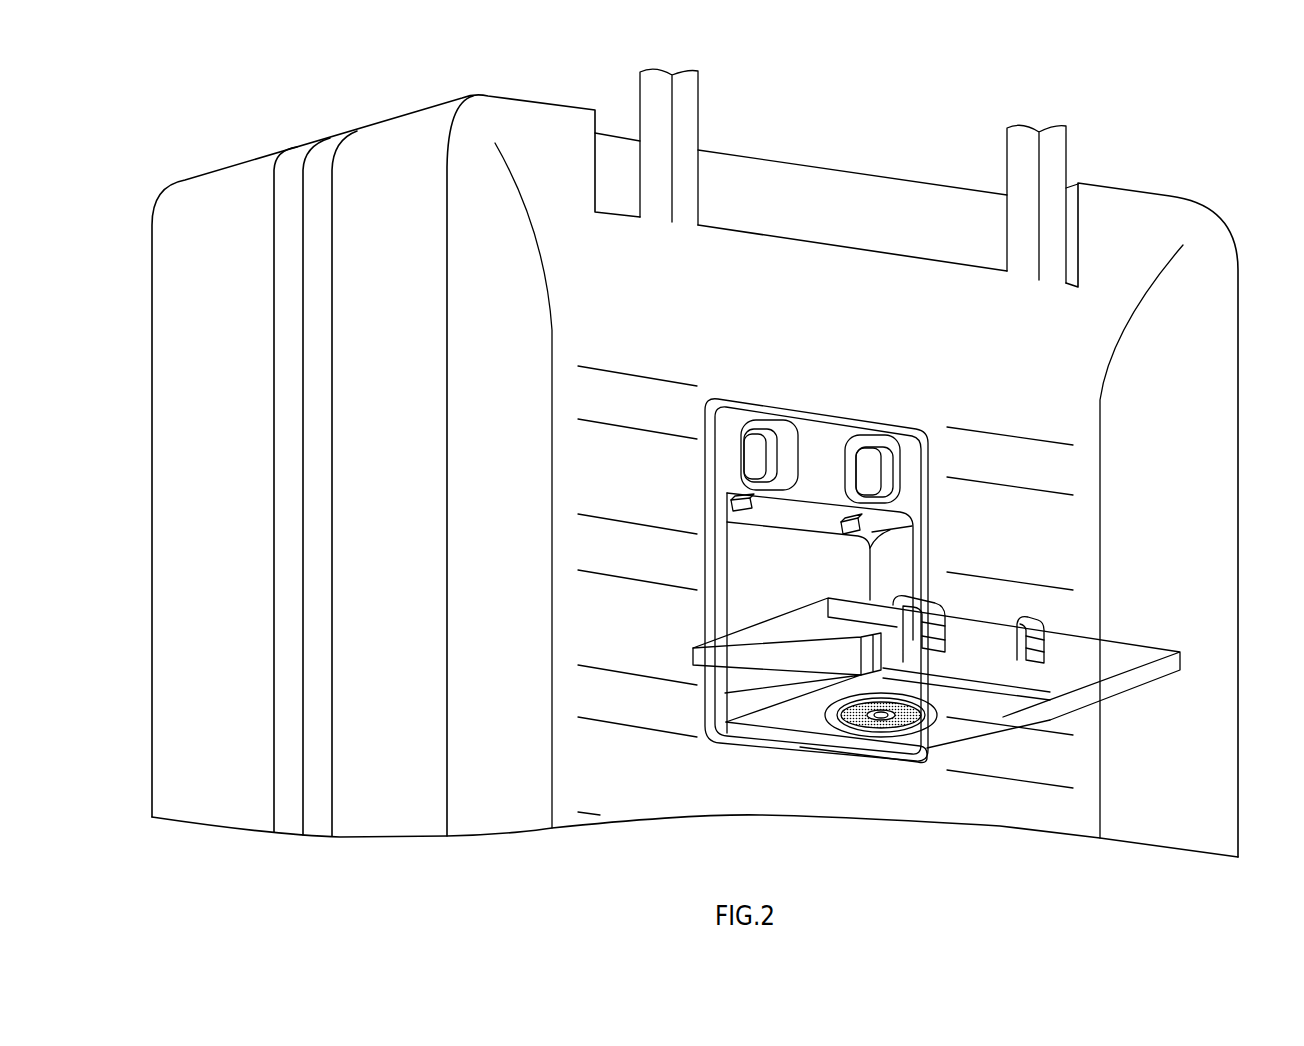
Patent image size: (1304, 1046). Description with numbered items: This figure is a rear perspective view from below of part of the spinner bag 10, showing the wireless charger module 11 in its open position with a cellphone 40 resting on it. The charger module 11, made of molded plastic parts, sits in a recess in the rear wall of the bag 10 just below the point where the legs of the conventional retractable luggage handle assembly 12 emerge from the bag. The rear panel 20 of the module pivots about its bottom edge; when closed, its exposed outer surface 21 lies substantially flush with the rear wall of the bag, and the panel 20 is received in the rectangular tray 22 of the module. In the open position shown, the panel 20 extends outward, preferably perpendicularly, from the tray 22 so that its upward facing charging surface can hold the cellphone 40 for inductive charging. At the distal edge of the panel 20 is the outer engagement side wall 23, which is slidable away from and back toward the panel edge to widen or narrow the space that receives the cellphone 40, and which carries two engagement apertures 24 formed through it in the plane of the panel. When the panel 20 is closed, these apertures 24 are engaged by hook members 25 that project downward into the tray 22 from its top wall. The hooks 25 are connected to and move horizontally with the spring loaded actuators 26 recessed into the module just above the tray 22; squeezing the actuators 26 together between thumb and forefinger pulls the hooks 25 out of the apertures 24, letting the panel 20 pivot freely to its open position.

The spinner bag 10 is at (1236, 192).
The wireless charger module 11 is at (920, 443).
The retractable luggage handle assembly 12 is at (1068, 162).
The rear panel 20 is at (963, 720).
The exposed outer surface 21 is at (792, 702).
The tray 22 is at (853, 573).
The outer engagement side wall 23 is at (1047, 675).
The engagement apertures 24 is at (1022, 640).
The hook members 25 is at (849, 538).
The spring loaded actuators 26 is at (853, 468).
The cellphone 40 is at (1140, 647).